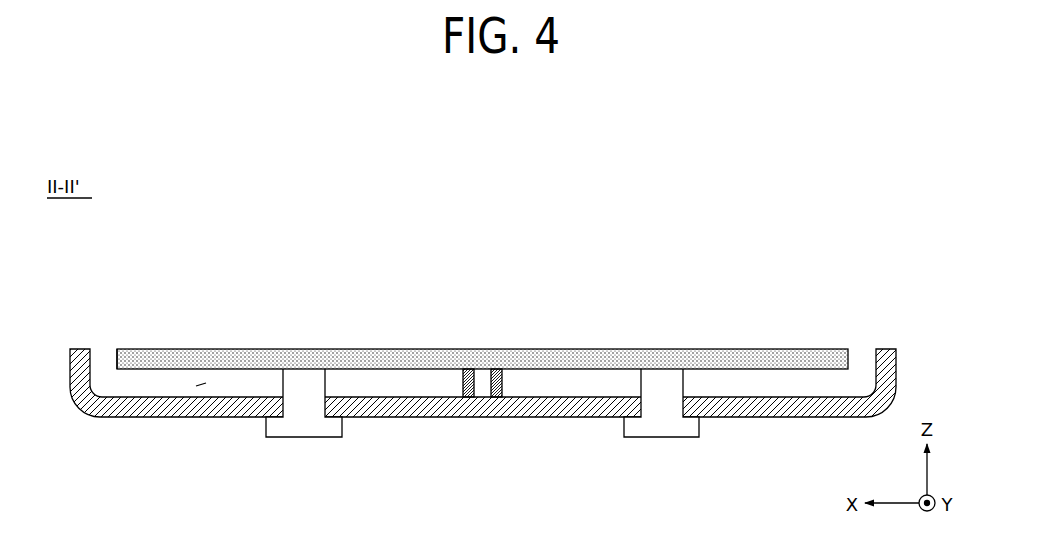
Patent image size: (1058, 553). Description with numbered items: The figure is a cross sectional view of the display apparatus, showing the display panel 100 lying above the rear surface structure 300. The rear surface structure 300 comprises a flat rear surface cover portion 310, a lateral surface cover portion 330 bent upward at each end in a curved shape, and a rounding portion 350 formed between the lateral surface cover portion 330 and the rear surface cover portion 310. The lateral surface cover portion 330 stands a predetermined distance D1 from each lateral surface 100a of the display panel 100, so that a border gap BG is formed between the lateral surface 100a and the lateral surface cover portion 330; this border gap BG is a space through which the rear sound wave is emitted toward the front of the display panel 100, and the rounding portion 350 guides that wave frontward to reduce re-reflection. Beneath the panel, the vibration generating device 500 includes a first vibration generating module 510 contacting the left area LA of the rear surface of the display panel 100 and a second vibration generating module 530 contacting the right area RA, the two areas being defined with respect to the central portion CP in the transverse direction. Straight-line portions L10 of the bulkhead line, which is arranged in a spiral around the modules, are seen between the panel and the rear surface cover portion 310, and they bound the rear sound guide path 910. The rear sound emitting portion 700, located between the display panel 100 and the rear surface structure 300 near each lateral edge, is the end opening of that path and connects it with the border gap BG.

The display panel 100 is at (232, 357).
The lateral surface of the display panel 100a is at (113, 369).
The rear surface structure 300 is at (62, 476).
The rear surface cover portion 310 is at (153, 420).
The lateral surface cover portion 330 is at (61, 378).
The rounding portion 350 is at (96, 408).
The vibration generating device 500 is at (482, 454).
The first vibration generating module 510 is at (318, 437).
The second vibration generating module 530 is at (661, 433).
The rear sound emitting portion 700 is at (124, 389).
The rear sound guide path 910 is at (200, 386).
The straight-line portion L10 is at (462, 386).
The border gap BG is at (104, 367).
The predetermined distance D1 is at (876, 346).
The left area LA is at (483, 215).
The central portion CP is at (483, 257).
The right area RA is at (483, 215).